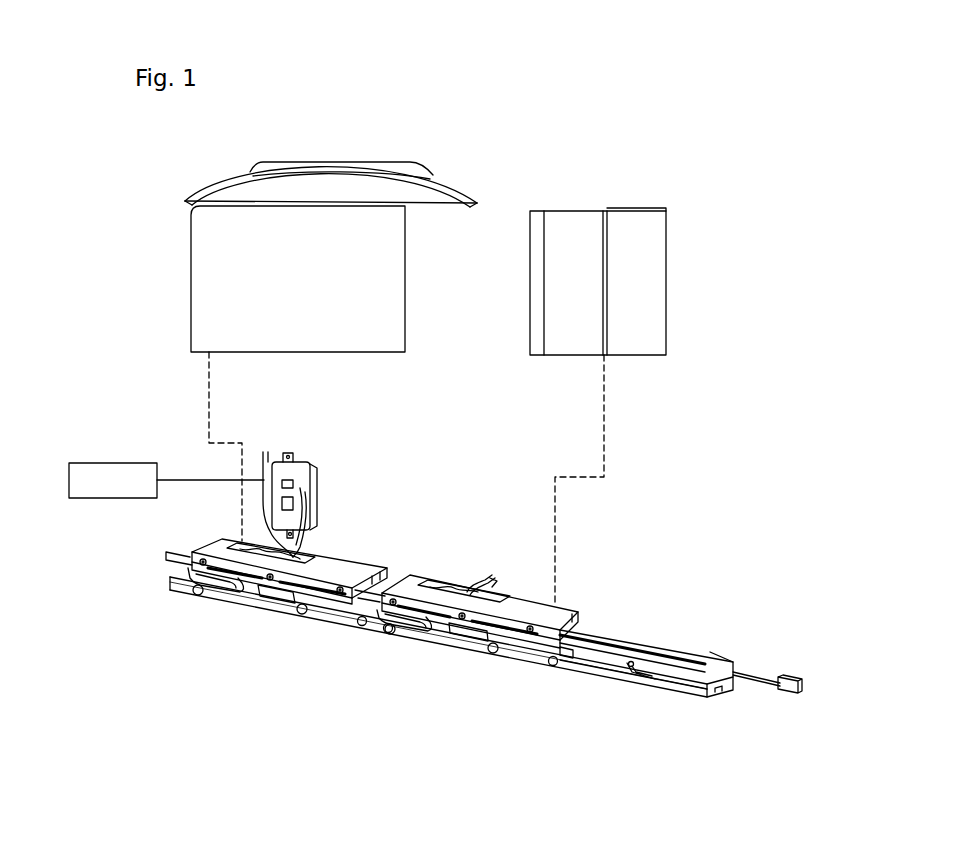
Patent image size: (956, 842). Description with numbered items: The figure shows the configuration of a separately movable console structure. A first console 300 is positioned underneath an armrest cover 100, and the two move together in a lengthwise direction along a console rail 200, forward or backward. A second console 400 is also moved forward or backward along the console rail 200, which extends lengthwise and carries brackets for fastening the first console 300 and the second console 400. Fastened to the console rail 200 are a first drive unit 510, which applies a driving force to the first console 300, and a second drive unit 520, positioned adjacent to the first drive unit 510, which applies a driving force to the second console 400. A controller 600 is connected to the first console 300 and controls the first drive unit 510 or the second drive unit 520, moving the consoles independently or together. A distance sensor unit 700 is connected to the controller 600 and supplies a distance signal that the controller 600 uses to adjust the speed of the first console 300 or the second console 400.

The armrest cover 100 is at (443, 192).
The console rail 200 is at (677, 685).
The first console 300 is at (205, 287).
The second console 400 is at (650, 261).
The first drive unit 510 is at (272, 593).
The second drive unit 520 is at (463, 637).
The controller 600 is at (310, 495).
The distance sensor unit 700 is at (108, 500).